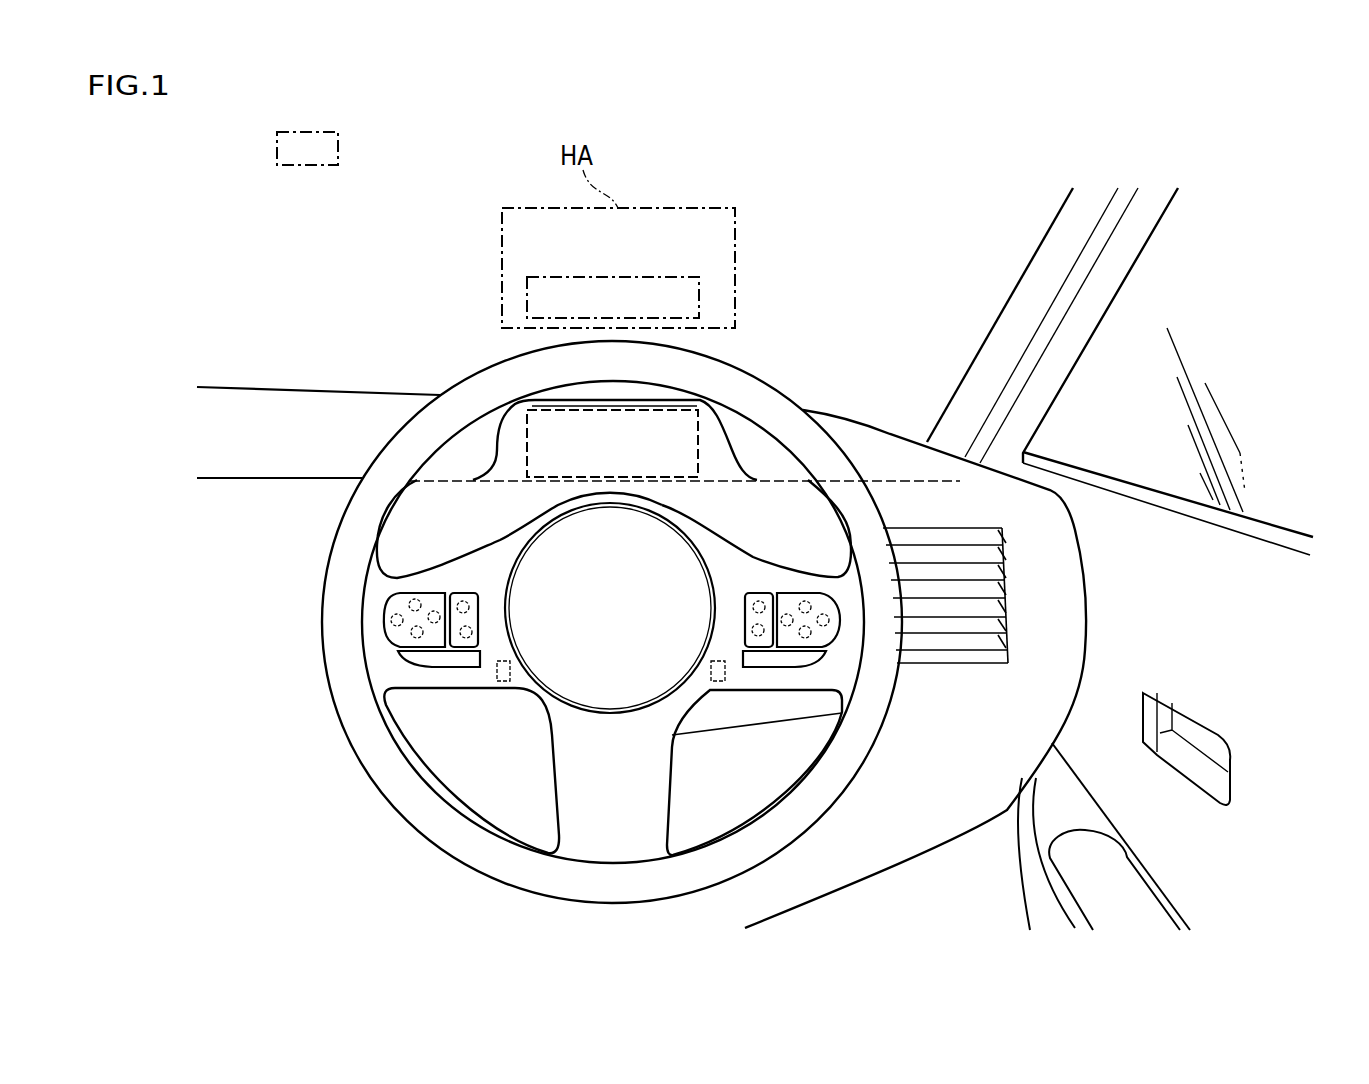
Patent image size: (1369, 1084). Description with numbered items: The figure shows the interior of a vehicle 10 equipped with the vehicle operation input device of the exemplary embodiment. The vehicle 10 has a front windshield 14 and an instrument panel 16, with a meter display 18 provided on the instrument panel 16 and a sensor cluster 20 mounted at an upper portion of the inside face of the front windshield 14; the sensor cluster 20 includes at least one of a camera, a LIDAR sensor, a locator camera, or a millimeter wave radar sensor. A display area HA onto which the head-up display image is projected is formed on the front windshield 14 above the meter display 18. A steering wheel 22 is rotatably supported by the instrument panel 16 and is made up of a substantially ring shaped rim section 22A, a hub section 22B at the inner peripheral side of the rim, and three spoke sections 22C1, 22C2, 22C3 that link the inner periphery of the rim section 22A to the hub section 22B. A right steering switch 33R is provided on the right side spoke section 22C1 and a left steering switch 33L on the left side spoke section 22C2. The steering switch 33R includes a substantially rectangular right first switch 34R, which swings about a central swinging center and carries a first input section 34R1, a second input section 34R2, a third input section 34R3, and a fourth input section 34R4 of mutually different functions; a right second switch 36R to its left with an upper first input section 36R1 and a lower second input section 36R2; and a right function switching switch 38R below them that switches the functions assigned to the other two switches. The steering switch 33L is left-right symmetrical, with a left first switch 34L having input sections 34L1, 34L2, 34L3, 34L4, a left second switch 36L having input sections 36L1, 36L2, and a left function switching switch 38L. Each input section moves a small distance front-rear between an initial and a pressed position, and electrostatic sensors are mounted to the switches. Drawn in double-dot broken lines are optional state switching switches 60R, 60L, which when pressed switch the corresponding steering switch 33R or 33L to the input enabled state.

The vehicle 10 is at (272, 260).
The front windshield 14 is at (1003, 260).
The instrument panel 16 is at (247, 410).
The meter display 18 is at (675, 423).
The sensor cluster 20 is at (338, 148).
The steering wheel 22 is at (551, 599).
The rim section 22A is at (325, 555).
The hub section 22B is at (543, 725).
The spoke section 22C1 is at (722, 548).
The spoke section 22C2 is at (508, 545).
The spoke section 22C3 is at (642, 808).
The steering switch 33L is at (395, 688).
The steering switch 33R is at (906, 642).
The left first switch 34L is at (341, 663).
The first input section 34L1 is at (414, 598).
The second input section 34L2 is at (391, 619).
The third input section 34L3 is at (433, 623).
The fourth input section 34L4 is at (410, 635).
The left second switch 36L is at (520, 584).
The first input section 36L1 is at (470, 607).
The second input section 36L2 is at (472, 632).
The left function switching switch 38L is at (445, 668).
The state switching switch 60L is at (503, 685).
The right first switch 34R is at (796, 629).
The first input section 34R1 is at (810, 604).
The second input section 34R2 is at (830, 623).
The third input section 34R3 is at (800, 634).
The fourth input section 34R4 is at (812, 636).
The right second switch 36R is at (715, 569).
The first input section 36R1 is at (755, 605).
The second input section 36R2 is at (752, 628).
The right function switching switch 38R is at (768, 668).
The state switching switch 60R is at (711, 727).